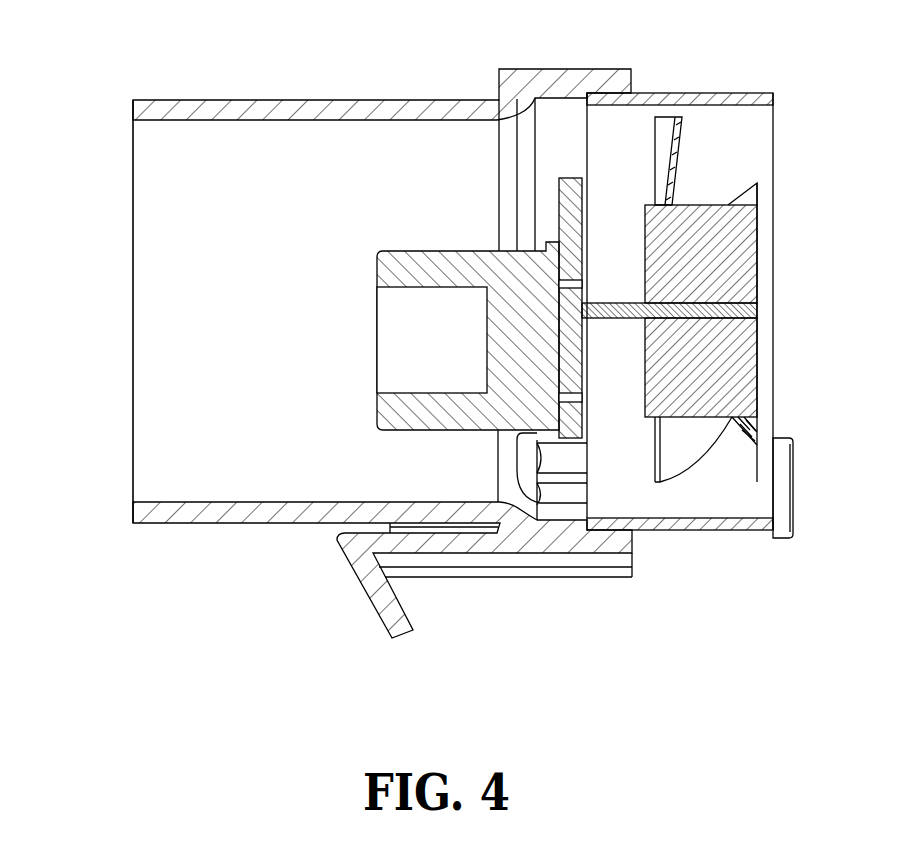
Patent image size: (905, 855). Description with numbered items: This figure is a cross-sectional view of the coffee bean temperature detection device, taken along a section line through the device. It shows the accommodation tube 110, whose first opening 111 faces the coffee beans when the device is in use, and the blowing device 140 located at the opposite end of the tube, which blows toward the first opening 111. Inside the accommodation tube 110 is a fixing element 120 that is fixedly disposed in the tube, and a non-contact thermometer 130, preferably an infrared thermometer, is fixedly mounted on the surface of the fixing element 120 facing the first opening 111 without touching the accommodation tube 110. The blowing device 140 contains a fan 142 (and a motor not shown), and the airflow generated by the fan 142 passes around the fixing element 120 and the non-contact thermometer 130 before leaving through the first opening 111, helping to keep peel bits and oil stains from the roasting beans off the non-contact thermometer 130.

The accommodation tube 110 is at (290, 247).
The first opening 111 is at (133, 311).
The fixing element 120 is at (566, 178).
The non-contact thermometer 130 is at (412, 262).
The blowing device 140 is at (690, 93).
The fan 142 is at (745, 275).